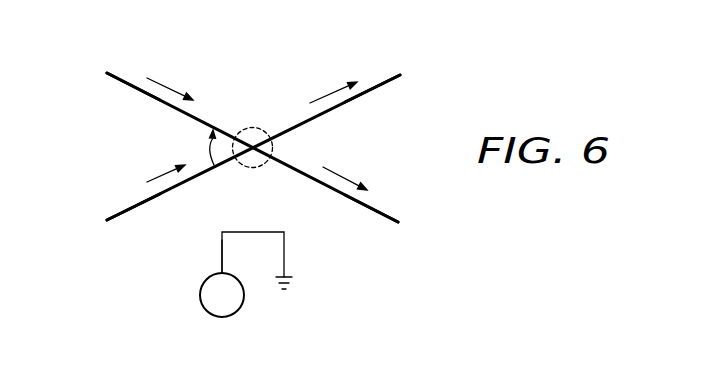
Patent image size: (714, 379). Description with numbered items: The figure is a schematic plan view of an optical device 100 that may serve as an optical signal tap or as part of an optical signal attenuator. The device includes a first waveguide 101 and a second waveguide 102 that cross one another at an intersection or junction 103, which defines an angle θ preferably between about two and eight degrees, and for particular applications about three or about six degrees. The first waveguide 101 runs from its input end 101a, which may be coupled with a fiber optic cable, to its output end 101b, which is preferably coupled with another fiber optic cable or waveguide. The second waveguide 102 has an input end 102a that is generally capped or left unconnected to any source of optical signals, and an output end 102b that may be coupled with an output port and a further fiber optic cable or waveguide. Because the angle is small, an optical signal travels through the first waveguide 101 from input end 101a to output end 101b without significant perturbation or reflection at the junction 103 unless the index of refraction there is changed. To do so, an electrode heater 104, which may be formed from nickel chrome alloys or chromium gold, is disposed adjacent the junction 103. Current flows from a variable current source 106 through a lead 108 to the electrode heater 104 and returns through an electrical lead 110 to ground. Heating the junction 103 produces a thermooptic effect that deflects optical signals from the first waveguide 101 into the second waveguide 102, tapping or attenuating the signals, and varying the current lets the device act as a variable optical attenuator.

The optical device 100 is at (346, 287).
The first waveguide 101 is at (117, 68).
The input end of first waveguide 101a is at (127, 86).
The output end of first waveguide 101b is at (408, 195).
The second waveguide 102 is at (117, 226).
The input end of second waveguide 102a is at (128, 207).
The output end of second waveguide 102b is at (377, 88).
The intersection or junction 103 is at (253, 127).
The electrode heater 104 is at (251, 231).
The variable current source 106 is at (200, 295).
The lead 108 is at (222, 247).
The electrical lead 110 is at (284, 248).